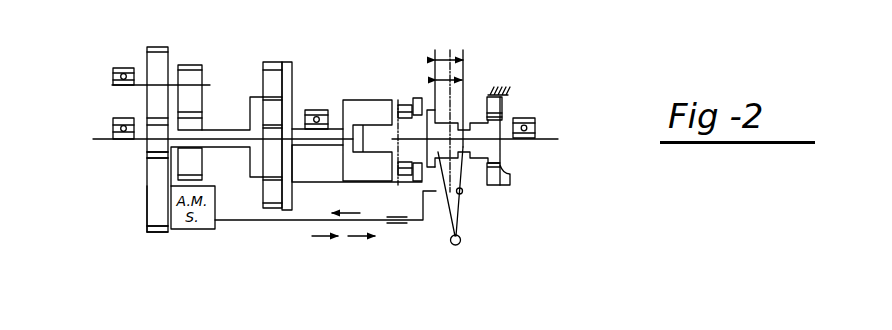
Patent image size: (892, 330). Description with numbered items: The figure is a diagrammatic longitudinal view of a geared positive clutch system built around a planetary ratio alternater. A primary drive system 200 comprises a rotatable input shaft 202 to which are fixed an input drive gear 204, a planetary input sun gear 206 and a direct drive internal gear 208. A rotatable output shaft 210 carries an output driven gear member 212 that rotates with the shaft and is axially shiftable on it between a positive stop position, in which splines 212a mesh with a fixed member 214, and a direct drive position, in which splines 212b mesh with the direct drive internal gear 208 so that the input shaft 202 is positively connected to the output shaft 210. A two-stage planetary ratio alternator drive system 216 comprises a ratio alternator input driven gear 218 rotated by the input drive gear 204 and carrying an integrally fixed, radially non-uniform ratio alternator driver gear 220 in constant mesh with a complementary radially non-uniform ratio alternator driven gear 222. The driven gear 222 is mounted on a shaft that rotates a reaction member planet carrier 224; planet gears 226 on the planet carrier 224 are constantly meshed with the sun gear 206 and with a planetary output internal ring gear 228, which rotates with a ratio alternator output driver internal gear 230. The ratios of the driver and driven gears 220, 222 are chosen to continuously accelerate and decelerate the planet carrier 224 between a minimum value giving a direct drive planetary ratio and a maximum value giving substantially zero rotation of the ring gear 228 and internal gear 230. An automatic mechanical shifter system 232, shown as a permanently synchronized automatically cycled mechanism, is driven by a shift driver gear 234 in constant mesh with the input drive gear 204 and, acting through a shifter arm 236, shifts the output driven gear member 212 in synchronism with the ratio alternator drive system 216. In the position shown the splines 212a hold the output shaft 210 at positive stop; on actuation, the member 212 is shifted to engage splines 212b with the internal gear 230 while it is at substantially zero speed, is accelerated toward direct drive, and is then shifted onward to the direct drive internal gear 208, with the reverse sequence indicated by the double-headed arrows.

The primary drive system 200 is at (115, 106).
The input shaft 202 is at (96, 139).
The input drive gear 204 is at (147, 152).
The planetary input sun gear 206 is at (291, 127).
The direct drive internal gear 208 is at (408, 105).
The output shaft 210 is at (548, 138).
The output driven gear member 212 is at (500, 155).
The splines 212a is at (510, 183).
The splines 212b is at (428, 110).
The fixed member 214 is at (507, 97).
The two-stage planetary ratio alternator drive system 216 is at (98, 76).
The ratio alternator input driven gear 218 is at (147, 47).
The ratio alternator driver gear 220 is at (187, 65).
The ratio alternator driven gear 222 is at (203, 118).
The reaction member planet carrier 224 is at (250, 176).
The planet gears 226 is at (272, 72).
The planetary output internal ring gear 228 is at (283, 63).
The ratio alternator output driver internal gear 230 is at (422, 181).
The automatic mechanical shifter system 232 is at (143, 218).
The shift driver gear 234 is at (163, 233).
The shifter arm 236 is at (460, 218).